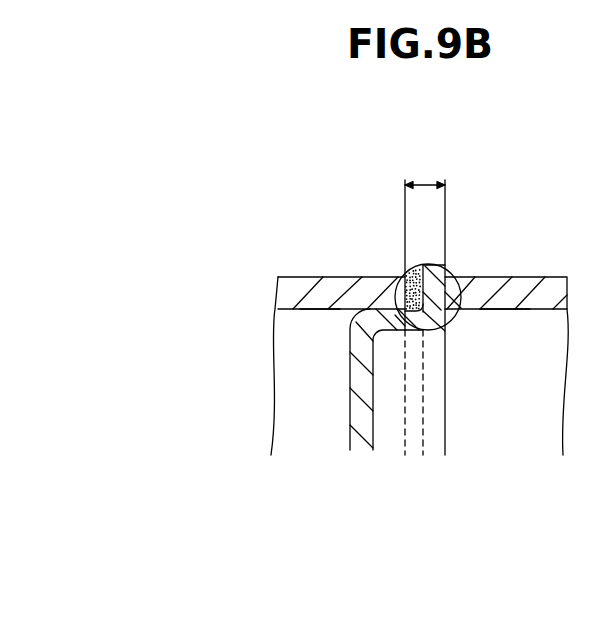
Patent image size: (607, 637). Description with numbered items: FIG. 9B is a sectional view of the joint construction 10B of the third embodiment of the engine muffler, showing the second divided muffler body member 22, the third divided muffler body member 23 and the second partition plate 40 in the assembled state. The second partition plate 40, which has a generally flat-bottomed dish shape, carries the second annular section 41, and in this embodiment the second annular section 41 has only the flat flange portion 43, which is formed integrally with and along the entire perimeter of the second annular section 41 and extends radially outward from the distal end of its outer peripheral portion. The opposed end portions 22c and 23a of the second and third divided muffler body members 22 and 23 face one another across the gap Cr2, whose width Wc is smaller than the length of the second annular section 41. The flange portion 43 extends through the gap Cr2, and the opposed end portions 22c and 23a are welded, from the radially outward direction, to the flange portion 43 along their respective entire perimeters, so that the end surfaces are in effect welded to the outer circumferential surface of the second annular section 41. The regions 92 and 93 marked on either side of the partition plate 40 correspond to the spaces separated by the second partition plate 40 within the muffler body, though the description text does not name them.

The joint construction 10B is at (293, 156).
The second divided muffler body member 22 is at (291, 292).
The opposed end portion of the second divided muffler body member 22c is at (318, 312).
The third divided muffler body member 23 is at (535, 278).
The opposed end portion of the third divided muffler body member 23a is at (503, 311).
The second partition plate 40 is at (361, 436).
The second annular section 41 is at (380, 313).
The flat flange portion 43 is at (439, 262).
The gap Cr2 is at (406, 262).
The width of the gap Wc is at (425, 305).
The first space 92 is at (324, 444).
The second space 93 is at (521, 444).